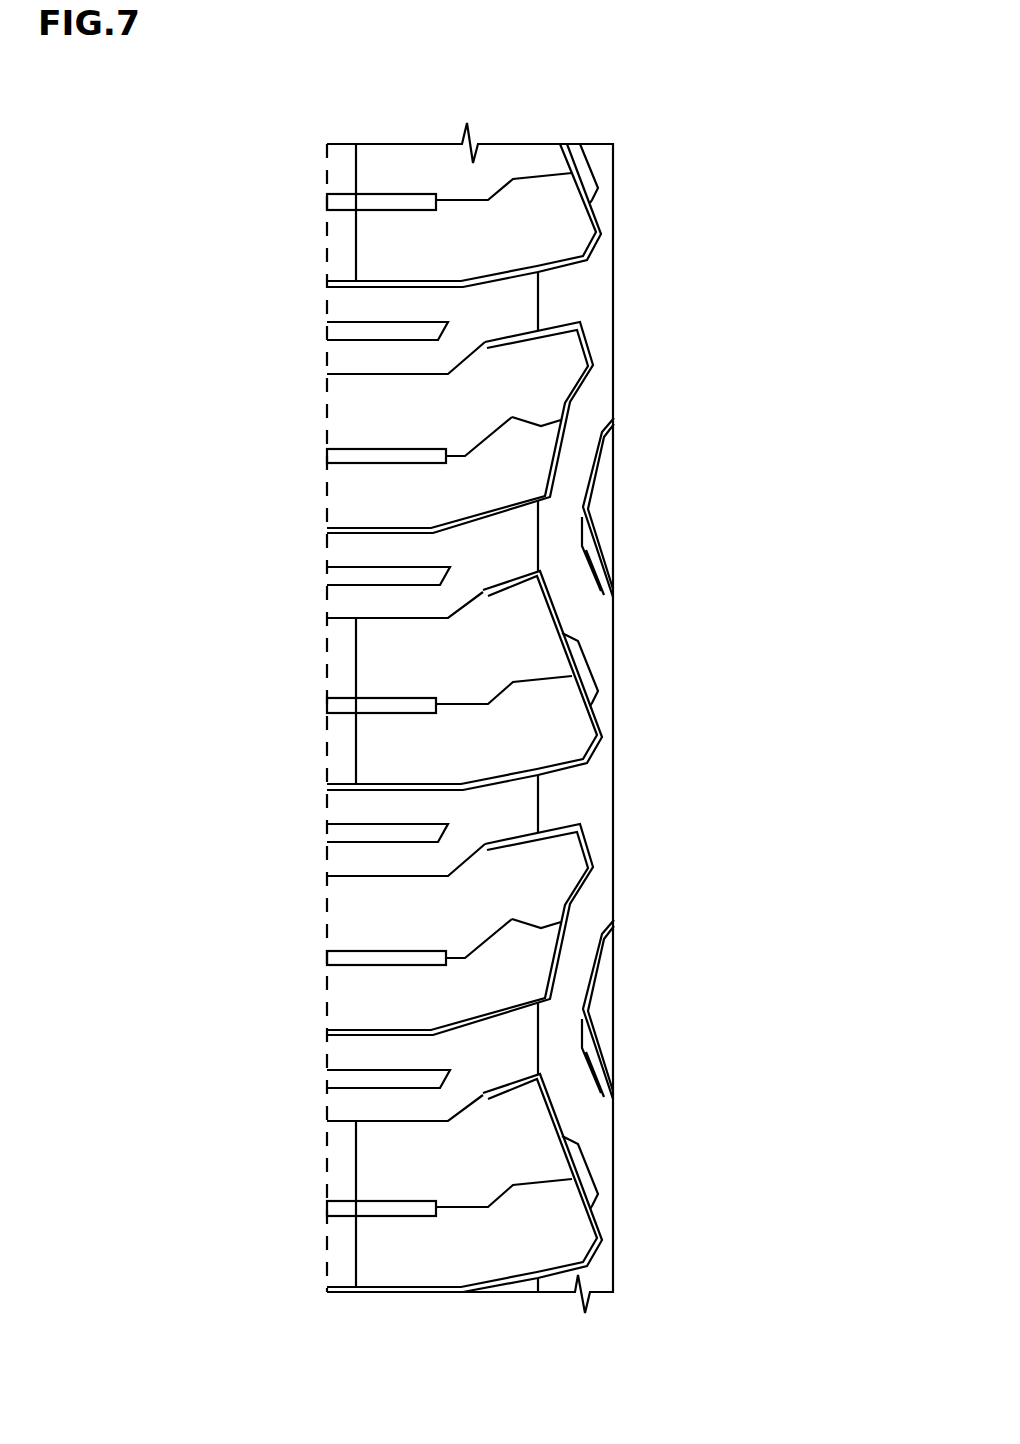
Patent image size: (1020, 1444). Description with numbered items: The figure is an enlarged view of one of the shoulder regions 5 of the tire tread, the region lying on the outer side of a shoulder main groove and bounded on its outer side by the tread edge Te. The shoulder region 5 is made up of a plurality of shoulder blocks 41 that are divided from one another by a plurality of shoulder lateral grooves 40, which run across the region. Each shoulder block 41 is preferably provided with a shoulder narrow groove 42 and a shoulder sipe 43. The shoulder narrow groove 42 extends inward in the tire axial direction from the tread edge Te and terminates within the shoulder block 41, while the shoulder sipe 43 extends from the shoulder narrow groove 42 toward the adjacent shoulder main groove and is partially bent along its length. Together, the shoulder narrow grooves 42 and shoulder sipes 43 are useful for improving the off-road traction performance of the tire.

The shoulder region 5 is at (438, 172).
The tread edge Te is at (327, 172).
The shoulder lateral groove 40 is at (427, 302).
The shoulder block 41 is at (483, 395).
The shoulder narrow groove 42 is at (385, 456).
The shoulder sipe 43 is at (495, 433).